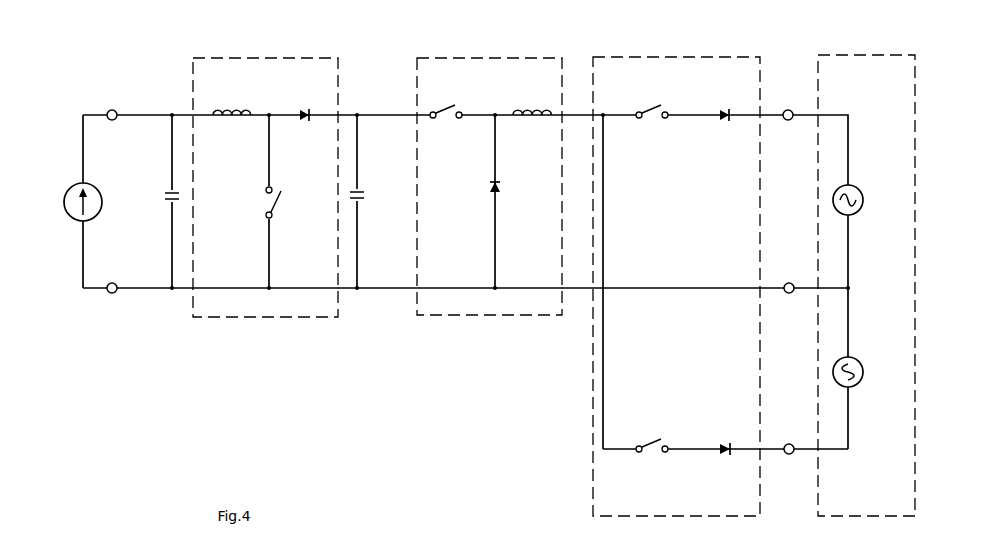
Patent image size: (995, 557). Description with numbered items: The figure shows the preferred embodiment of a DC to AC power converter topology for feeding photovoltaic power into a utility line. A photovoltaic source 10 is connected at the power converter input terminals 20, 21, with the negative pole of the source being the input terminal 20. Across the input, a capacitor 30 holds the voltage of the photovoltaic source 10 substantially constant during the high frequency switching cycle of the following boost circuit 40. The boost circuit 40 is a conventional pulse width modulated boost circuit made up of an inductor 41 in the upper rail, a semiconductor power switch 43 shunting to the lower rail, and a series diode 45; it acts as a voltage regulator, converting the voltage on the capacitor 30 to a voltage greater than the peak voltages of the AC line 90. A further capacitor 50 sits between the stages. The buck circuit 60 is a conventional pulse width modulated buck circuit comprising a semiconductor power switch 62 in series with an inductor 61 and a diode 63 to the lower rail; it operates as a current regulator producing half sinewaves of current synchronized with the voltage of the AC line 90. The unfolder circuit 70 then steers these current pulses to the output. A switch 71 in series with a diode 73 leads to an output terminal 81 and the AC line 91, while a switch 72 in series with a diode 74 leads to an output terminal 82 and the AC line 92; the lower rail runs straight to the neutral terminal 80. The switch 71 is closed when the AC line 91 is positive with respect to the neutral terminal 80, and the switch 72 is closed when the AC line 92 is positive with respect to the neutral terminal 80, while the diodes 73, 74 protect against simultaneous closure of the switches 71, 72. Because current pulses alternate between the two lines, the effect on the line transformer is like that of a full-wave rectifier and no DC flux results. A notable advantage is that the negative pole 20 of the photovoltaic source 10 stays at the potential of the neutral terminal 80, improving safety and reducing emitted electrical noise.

The photovoltaic source 10 is at (63, 200).
The input terminal 20 is at (112, 294).
The input terminal 21 is at (112, 109).
The capacitor 30 is at (164, 197).
The boost circuit 40 is at (263, 56).
The inductor 41 is at (233, 108).
The semiconductor power switch 43 is at (283, 209).
The diode 45 is at (309, 108).
The capacitor 50 is at (367, 197).
The buck circuit 60 is at (486, 56).
The inductor 61 is at (535, 107).
The semiconductor power switch 62 is at (452, 100).
The diode 63 is at (501, 188).
The unfolder circuit 70 is at (677, 56).
The switch 71 is at (656, 100).
The switch 72 is at (651, 455).
The diode 73 is at (729, 108).
The diode 74 is at (730, 455).
The neutral terminal 80 is at (789, 282).
The output terminal 81 is at (788, 109).
The output terminal 82 is at (789, 455).
The AC line 90 is at (867, 54).
The AC line 91 is at (863, 208).
The AC line 92 is at (863, 380).